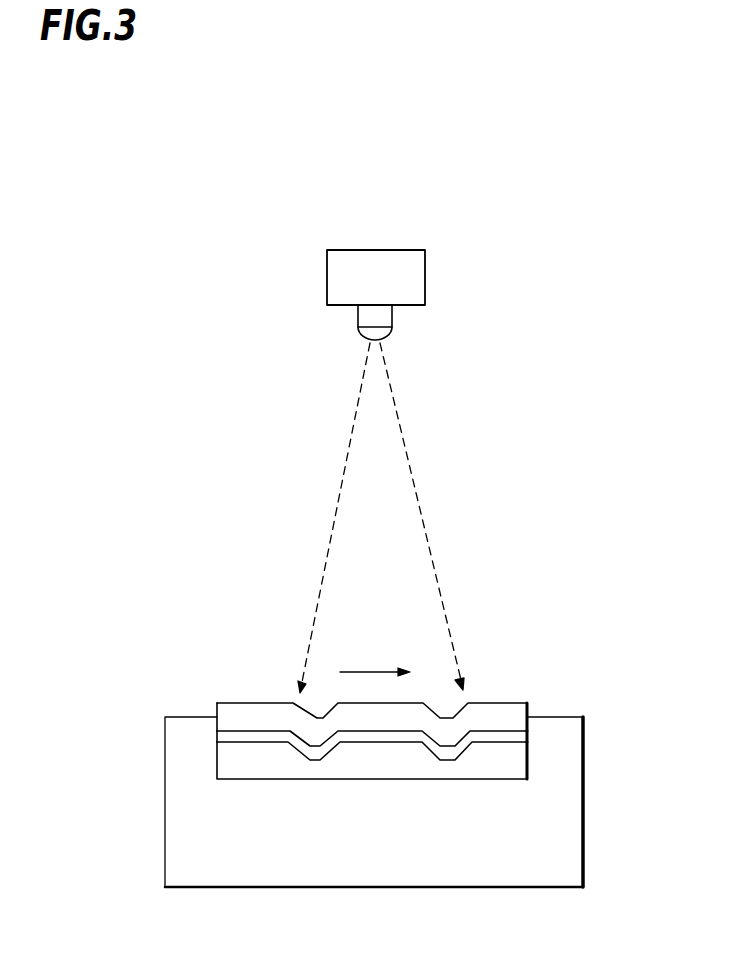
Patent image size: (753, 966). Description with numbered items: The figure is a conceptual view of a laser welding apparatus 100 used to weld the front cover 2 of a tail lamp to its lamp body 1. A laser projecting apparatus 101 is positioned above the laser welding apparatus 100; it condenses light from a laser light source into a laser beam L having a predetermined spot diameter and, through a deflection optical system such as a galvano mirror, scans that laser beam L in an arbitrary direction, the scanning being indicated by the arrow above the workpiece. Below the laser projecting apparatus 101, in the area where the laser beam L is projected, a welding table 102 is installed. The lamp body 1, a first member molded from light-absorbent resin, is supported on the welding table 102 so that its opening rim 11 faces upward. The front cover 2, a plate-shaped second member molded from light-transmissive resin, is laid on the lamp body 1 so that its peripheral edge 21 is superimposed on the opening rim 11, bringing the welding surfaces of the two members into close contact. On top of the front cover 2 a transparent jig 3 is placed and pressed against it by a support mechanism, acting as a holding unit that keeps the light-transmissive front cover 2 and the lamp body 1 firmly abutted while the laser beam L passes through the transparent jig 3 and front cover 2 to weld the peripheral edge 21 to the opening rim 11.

The laser welding apparatus 100 is at (452, 262).
The laser projecting apparatus 101 is at (410, 293).
The laser beam L is at (437, 583).
The welding table 102 is at (560, 873).
The lamp body 1 is at (371, 769).
The front cover 2 is at (370, 725).
The transparent jig 3 is at (513, 716).
The opening rim 11 is at (222, 751).
The peripheral edge 21 is at (222, 738).